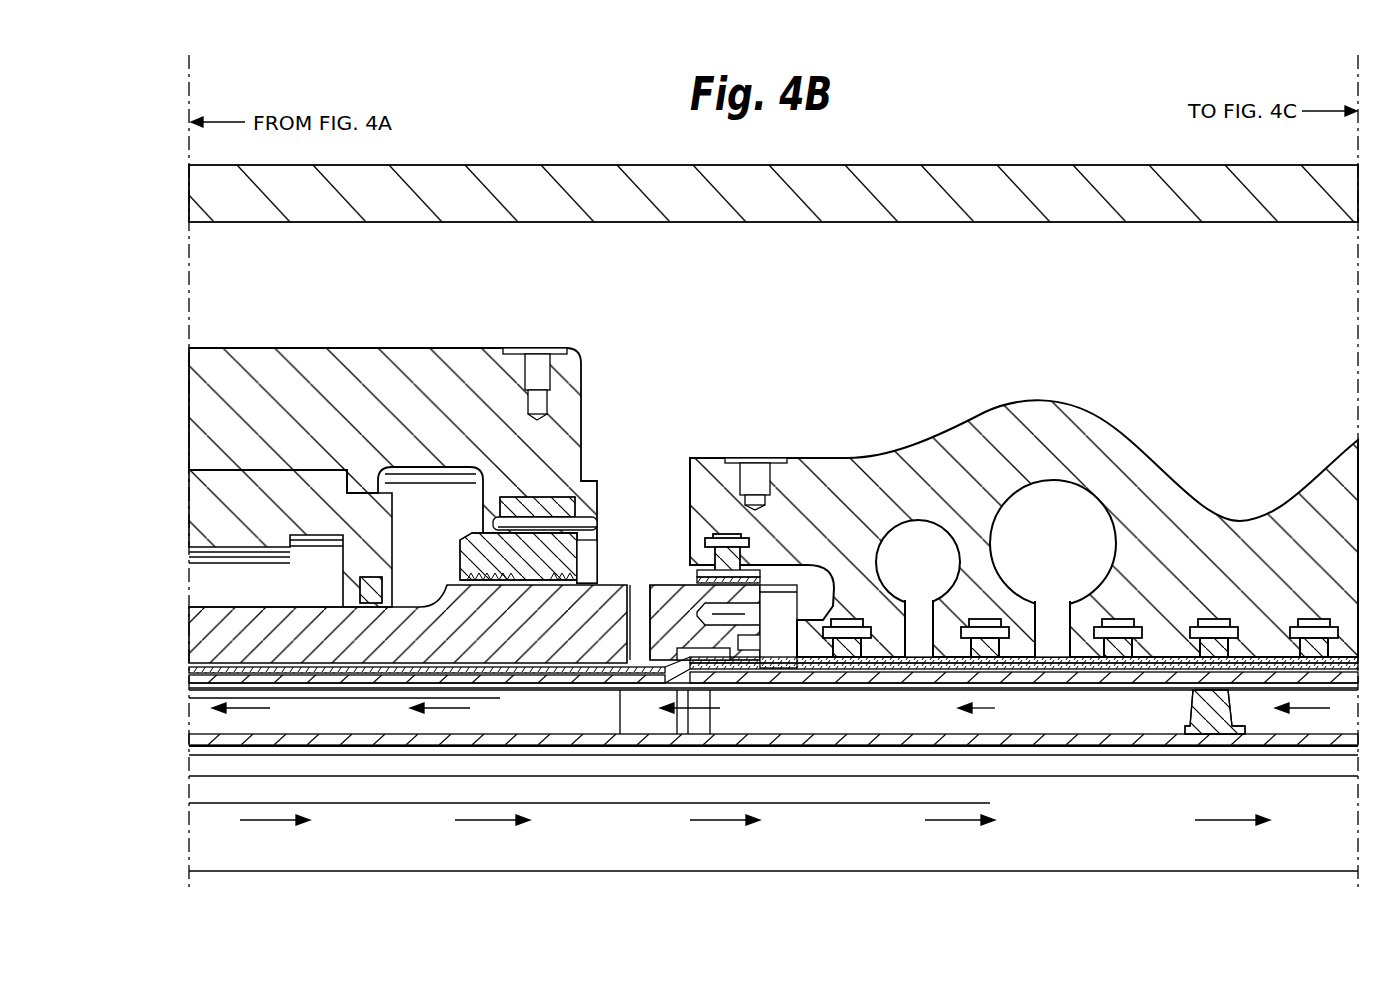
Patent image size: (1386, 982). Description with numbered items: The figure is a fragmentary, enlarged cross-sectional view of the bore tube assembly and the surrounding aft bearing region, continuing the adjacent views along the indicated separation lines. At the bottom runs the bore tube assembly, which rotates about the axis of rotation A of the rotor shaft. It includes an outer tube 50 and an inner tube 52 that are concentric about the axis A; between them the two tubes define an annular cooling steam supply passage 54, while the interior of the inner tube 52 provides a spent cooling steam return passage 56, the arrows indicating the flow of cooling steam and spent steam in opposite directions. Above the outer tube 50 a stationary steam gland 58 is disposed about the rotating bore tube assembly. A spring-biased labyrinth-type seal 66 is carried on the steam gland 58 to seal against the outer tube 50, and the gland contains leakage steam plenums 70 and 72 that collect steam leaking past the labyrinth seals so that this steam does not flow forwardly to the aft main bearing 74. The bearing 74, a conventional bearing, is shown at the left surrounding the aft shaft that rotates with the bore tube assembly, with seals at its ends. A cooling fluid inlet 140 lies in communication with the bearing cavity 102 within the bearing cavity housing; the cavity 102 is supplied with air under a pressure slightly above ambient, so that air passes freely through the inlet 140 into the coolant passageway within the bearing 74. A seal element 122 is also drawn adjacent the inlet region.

The bearing cavity 102 is at (722, 324).
The aft main bearing 74 is at (428, 375).
The cooling fluid inlet 140 is at (640, 604).
The seal element 122 is at (703, 652).
The steam gland 58 is at (932, 472).
The leakage steam plenum 72 is at (930, 578).
The leakage steam plenum 70 is at (1065, 559).
The labyrinth-type seal 66 is at (1216, 621).
The outer tube 50 is at (884, 672).
The annular cooling steam supply passage 54 is at (842, 718).
The inner tube 52 is at (1045, 746).
The spent cooling steam return passage 56 is at (836, 849).
The axis of rotation A is at (437, 871).